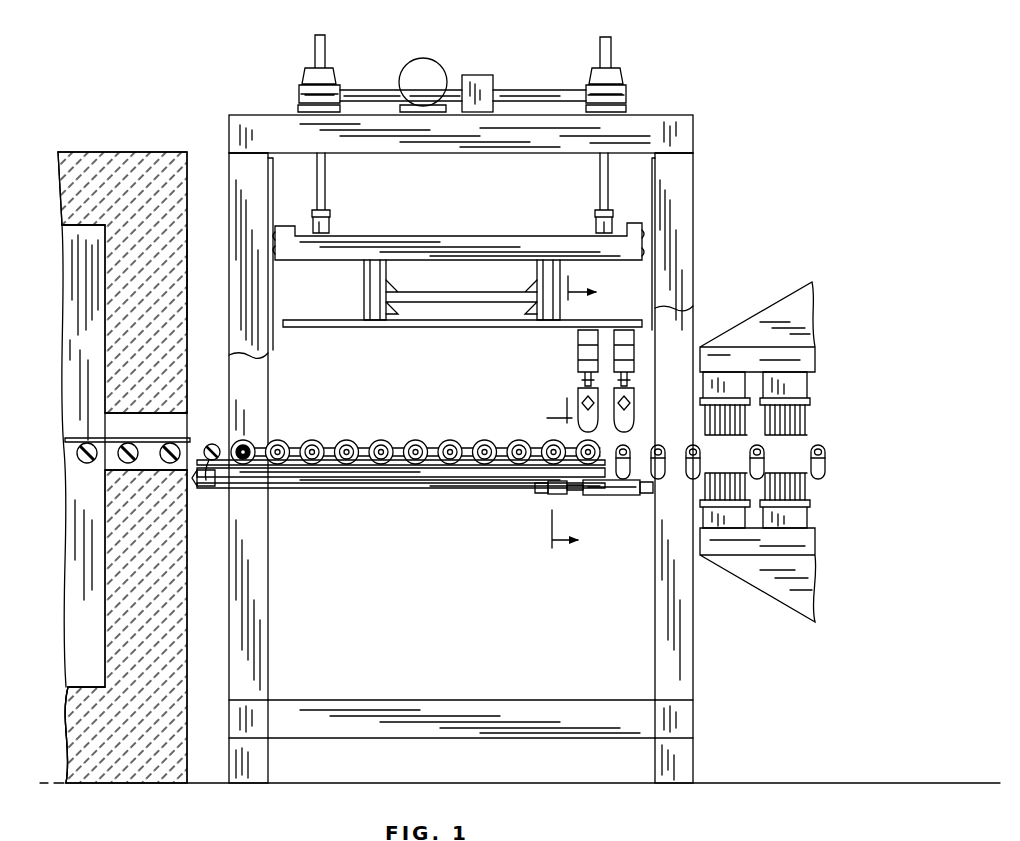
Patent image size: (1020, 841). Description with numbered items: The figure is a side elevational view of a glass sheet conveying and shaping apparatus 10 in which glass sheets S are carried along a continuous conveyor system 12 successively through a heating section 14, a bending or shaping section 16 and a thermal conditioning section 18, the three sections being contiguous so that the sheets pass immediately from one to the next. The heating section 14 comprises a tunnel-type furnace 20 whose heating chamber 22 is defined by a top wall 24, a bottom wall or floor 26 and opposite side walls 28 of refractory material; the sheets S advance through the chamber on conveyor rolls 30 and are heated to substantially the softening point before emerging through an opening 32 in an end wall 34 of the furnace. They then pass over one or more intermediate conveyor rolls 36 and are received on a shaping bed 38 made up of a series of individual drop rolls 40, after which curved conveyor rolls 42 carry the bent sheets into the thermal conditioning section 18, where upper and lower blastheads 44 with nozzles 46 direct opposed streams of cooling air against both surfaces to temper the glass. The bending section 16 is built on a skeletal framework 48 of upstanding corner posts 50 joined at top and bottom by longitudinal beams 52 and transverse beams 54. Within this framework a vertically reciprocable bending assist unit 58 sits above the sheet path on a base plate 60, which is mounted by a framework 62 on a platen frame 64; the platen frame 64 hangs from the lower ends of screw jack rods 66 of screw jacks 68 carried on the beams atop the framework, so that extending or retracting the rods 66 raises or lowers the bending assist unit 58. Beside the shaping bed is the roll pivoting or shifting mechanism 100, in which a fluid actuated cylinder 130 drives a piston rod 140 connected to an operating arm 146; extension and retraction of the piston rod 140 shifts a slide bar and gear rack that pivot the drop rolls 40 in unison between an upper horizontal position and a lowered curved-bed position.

The glass sheet conveying and shaping apparatus 10 is at (672, 46).
The continuous conveyor system 12 is at (320, 428).
The heating section 14 is at (92, 136).
The bending or shaping section 16 is at (656, 108).
The thermal conditioning section 18 is at (802, 270).
The tunnel-type furnace 20 is at (141, 147).
The heating chamber 22 is at (78, 292).
The top wall 24 is at (62, 210).
The bottom wall or floor 26 is at (72, 724).
The side walls 28 is at (86, 648).
The conveyor rolls 30 is at (124, 461).
The opening 32 is at (176, 420).
The end wall 34 is at (185, 298).
The intermediate conveyor rolls 36 is at (208, 476).
The shaping bed 38 is at (372, 492).
The drop rolls 40 is at (388, 437).
The curved conveyor rolls 42 is at (694, 446).
The blastheads 44 is at (800, 382).
The nozzles 46 is at (806, 430).
The skeletal framework 48 is at (696, 196).
The corner posts 50 is at (690, 318).
The longitudinal beams 52 is at (286, 118).
The transverse beams 54 is at (689, 128).
The bending assist unit 58 is at (576, 352).
The base plate 60 is at (434, 328).
The framework 62 is at (366, 287).
The platen frame 64 is at (458, 236).
The screw jack rods 66 is at (325, 170).
The screw jacks 68 is at (318, 70).
The roll pivoting or shifting mechanism 100 is at (544, 498).
The fluid actuated cylinder 130 is at (618, 496).
The piston rod 140 is at (568, 492).
The operating arm 146 is at (546, 484).
The glass sheets S is at (95, 437).